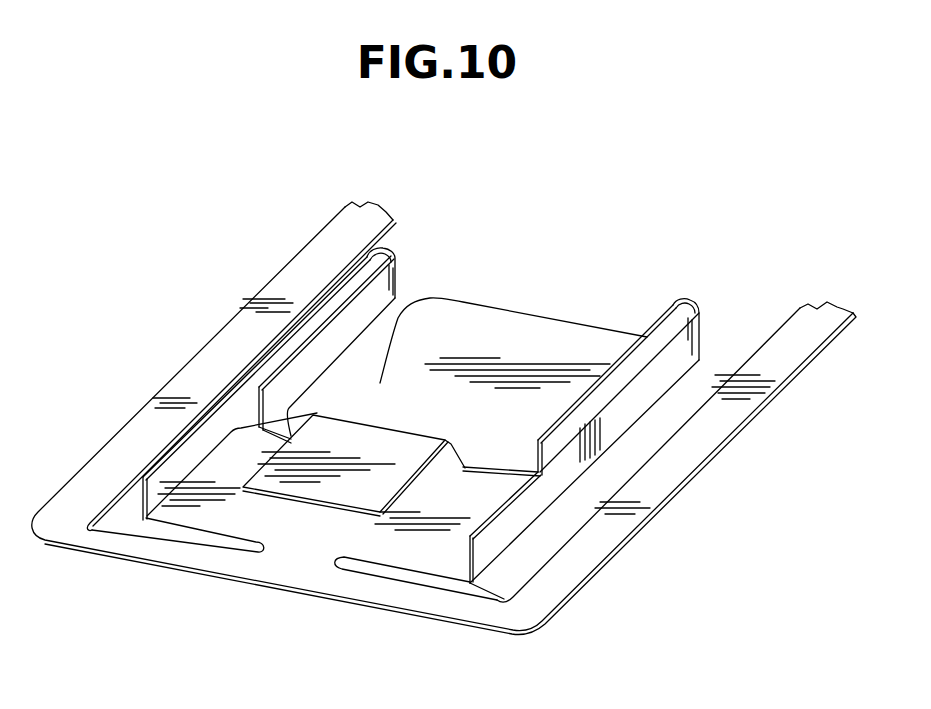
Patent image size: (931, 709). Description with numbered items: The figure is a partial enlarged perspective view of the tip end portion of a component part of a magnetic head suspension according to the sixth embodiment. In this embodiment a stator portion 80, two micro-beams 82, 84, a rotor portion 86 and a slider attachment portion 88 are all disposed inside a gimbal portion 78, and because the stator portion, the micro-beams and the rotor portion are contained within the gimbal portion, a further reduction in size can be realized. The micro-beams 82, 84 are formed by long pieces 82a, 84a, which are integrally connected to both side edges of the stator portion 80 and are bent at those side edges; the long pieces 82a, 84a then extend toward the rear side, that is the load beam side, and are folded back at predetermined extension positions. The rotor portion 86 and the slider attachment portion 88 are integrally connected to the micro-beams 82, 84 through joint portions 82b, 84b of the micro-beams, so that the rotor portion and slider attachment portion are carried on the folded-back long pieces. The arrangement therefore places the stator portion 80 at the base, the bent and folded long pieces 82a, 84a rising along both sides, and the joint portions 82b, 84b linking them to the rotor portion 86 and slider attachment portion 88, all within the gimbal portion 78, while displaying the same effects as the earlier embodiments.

The gimbal portion 78 is at (517, 613).
The stator portion 80 is at (310, 523).
The micro-beam 82 is at (347, 290).
The long piece 82a is at (170, 473).
The joint portion 82b is at (280, 422).
The micro-beam 84 is at (681, 308).
The long piece 84a is at (650, 385).
The joint portion 84b is at (527, 470).
The rotor portion 86 is at (357, 458).
The slider attachment portion 88 is at (487, 327).